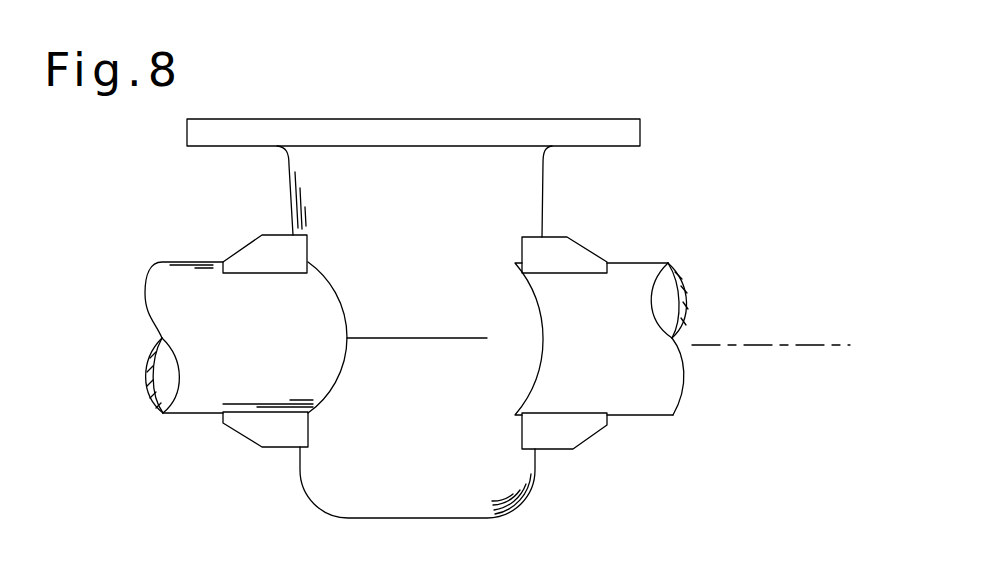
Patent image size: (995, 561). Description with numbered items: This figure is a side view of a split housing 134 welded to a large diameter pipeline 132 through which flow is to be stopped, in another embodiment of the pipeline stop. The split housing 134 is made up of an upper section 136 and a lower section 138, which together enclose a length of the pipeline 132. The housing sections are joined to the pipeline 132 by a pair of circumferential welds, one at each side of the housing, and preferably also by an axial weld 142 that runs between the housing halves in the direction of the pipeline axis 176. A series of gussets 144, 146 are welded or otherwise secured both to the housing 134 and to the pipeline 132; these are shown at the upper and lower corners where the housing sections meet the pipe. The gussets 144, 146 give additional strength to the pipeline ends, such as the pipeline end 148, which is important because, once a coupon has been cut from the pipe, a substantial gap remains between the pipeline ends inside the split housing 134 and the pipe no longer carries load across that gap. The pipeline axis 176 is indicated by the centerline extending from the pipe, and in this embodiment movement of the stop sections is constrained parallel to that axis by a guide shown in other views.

The split housing 134 is at (608, 93).
The upper section 136 is at (375, 188).
The lower section 138 is at (455, 489).
The axial weld 142 is at (405, 338).
The gusset 144 is at (255, 253).
The pipeline 132 is at (640, 270).
The pipeline end 148 is at (323, 362).
The gusset 146 is at (567, 432).
The pipeline axis 176 is at (782, 345).